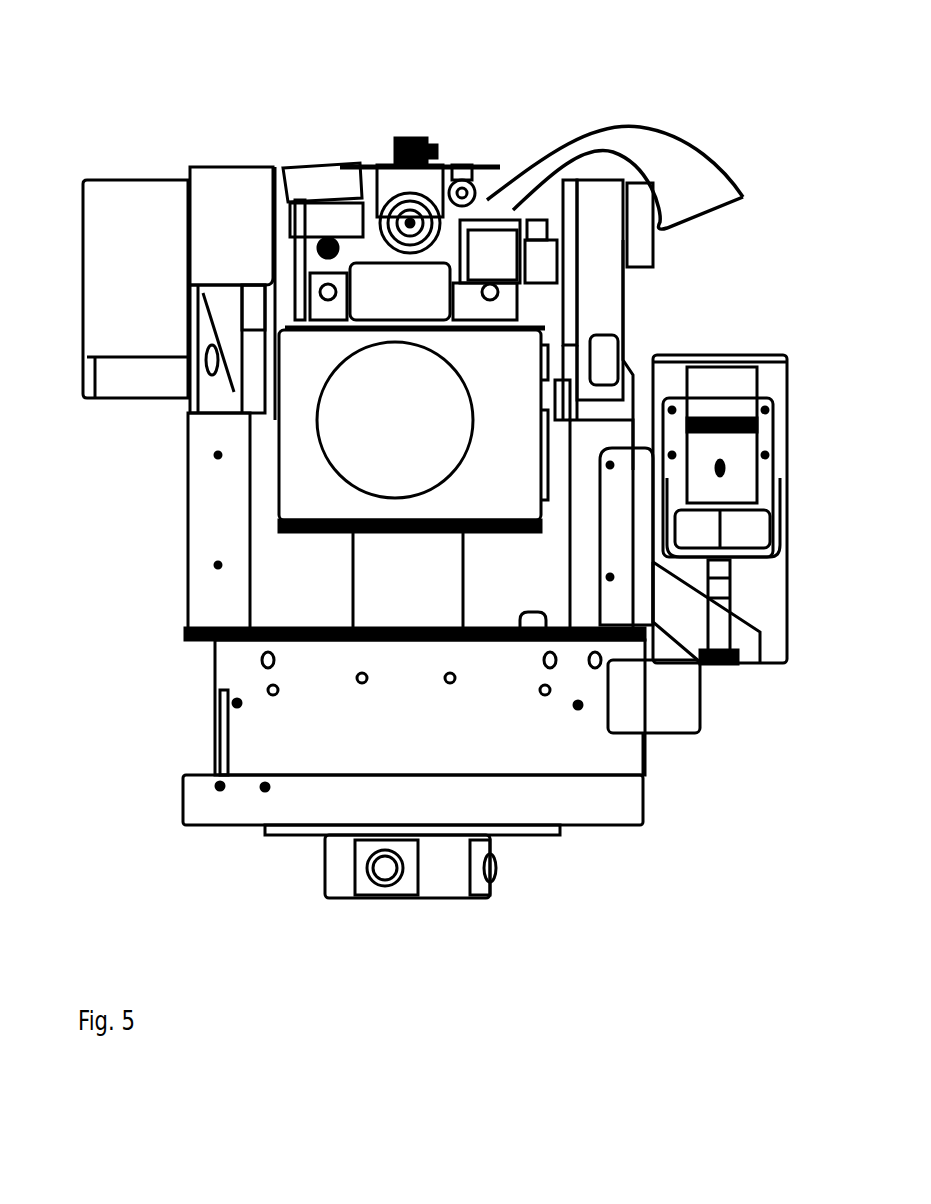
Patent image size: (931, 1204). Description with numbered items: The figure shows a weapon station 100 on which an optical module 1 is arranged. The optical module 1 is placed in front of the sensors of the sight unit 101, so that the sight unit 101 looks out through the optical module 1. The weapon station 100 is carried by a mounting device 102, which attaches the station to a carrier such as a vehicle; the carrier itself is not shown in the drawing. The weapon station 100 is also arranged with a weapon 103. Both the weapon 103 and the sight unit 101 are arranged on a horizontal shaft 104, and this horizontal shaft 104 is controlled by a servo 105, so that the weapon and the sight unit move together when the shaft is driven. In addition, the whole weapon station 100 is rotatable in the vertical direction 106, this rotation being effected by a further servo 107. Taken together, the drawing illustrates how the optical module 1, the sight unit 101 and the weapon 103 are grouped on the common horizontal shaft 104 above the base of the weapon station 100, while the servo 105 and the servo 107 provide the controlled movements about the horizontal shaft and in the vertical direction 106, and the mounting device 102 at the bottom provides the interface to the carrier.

The optical module 1 is at (562, 348).
The weapon station 100 is at (232, 144).
The sight unit 101 is at (550, 410).
The mounting device 102 is at (405, 910).
The weapon 103 is at (388, 128).
The horizontal shaft 104 is at (562, 192).
The servo 105 is at (130, 172).
The vertical direction 106 is at (656, 780).
The servo 107 is at (705, 712).